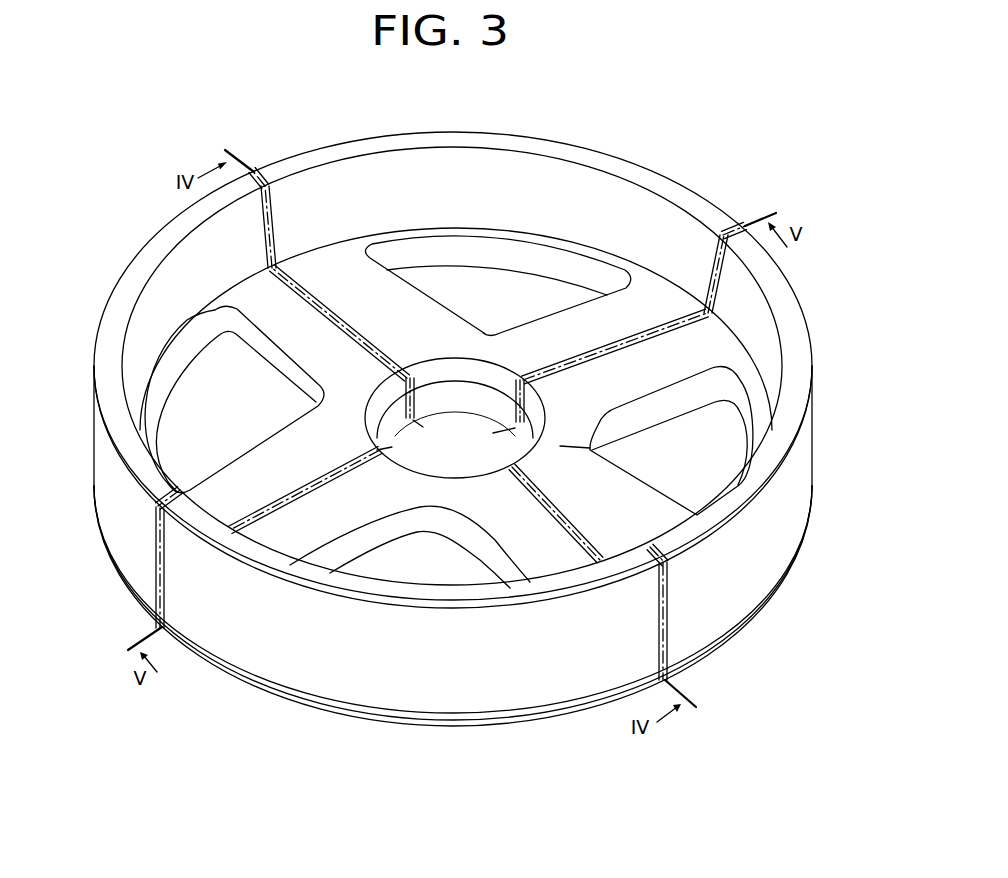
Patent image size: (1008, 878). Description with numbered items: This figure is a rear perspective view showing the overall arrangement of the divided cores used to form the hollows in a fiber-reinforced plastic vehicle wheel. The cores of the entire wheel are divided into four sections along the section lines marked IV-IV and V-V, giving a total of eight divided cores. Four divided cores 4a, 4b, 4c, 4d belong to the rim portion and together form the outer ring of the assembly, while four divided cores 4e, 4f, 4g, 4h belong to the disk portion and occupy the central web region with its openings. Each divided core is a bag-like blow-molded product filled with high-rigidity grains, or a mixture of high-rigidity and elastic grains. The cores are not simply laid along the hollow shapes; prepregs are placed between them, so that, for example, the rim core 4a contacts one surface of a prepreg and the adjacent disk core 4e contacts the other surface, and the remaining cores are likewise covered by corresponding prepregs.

The divided core 4a is at (530, 143).
The divided core 4b is at (789, 404).
The divided core 4c is at (380, 673).
The divided core 4d is at (123, 305).
The divided core 4e is at (337, 277).
The divided core 4f is at (688, 527).
The divided core 4g is at (340, 508).
The divided core 4h is at (252, 293).